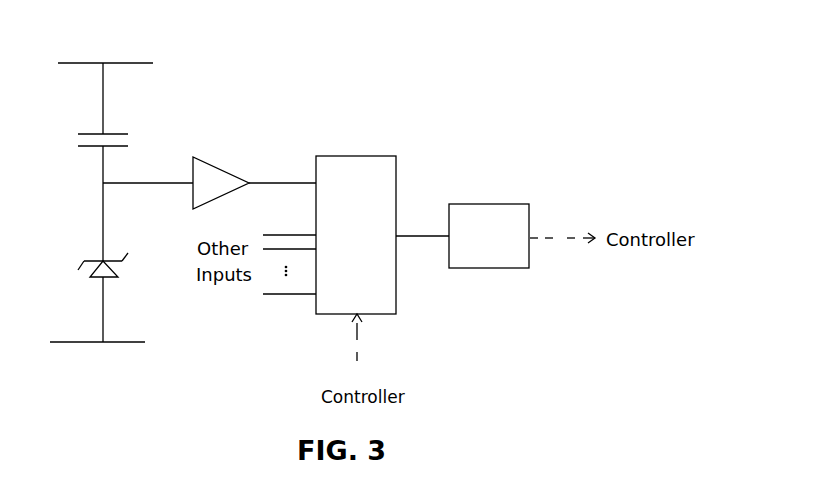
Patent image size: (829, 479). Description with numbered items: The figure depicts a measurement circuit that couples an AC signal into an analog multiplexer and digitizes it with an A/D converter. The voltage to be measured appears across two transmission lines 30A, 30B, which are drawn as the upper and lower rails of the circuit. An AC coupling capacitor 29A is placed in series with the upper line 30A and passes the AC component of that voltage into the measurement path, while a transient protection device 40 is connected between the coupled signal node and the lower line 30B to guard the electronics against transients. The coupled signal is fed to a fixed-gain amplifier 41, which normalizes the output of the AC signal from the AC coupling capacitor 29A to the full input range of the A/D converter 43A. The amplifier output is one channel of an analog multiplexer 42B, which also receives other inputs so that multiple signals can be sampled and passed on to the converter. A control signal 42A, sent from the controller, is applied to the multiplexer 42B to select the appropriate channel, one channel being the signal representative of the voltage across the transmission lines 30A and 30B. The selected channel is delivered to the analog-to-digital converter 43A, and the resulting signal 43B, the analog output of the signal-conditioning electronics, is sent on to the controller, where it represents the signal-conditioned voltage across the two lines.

The transmission line 30A is at (93, 63).
The AC coupling capacitor 29A is at (110, 133).
The transient protection device 40 is at (88, 261).
The transmission line 30B is at (90, 342).
The fixed-gain amplifier 41 is at (205, 168).
The analog multiplexer 42B is at (351, 166).
The control signal 42A is at (358, 338).
The analog-to-digital converter 43A is at (488, 210).
The analog output signal 43B is at (553, 238).